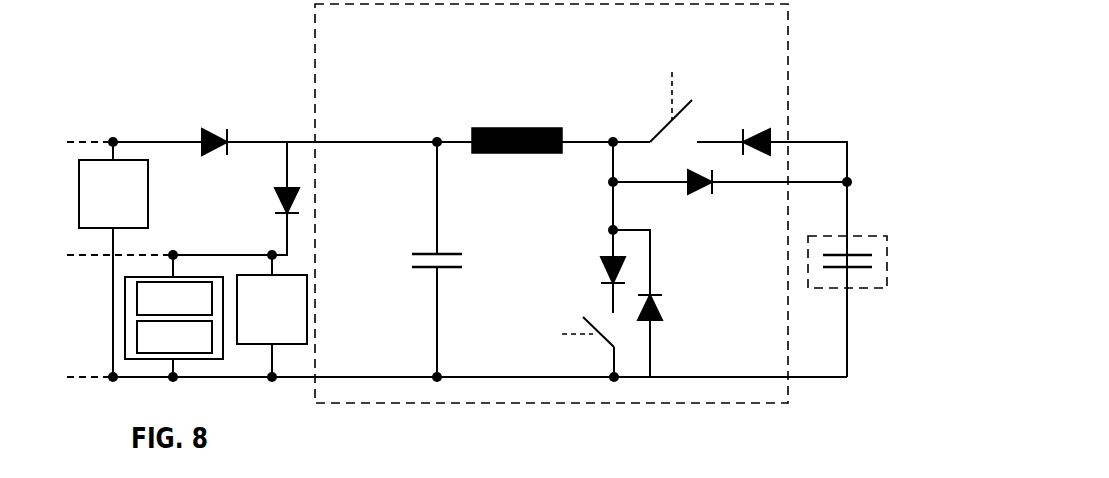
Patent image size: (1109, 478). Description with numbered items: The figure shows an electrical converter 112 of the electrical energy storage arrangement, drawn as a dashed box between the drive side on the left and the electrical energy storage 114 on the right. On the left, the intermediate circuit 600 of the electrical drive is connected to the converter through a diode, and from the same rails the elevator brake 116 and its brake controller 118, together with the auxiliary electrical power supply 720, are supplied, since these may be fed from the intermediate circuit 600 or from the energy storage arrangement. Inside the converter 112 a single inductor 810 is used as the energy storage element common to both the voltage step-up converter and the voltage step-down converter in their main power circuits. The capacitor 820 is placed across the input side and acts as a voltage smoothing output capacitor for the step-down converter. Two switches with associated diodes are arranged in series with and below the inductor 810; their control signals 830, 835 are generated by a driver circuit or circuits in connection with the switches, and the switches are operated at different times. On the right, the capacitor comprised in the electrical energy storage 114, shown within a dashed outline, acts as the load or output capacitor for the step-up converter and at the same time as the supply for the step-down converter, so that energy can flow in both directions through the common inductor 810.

The electrical converter 112 is at (315, 75).
The electrical energy storage 114 is at (867, 236).
The elevator brake 116 is at (174, 298).
The brake controller 118 is at (174, 337).
The intermediate circuit 600 is at (113, 194).
The auxiliary electrical power supply 720 is at (272, 309).
The inductor 810 is at (513, 128).
The capacitor 820 is at (425, 253).
The control signal 830 is at (672, 72).
The control signal 835 is at (562, 334).